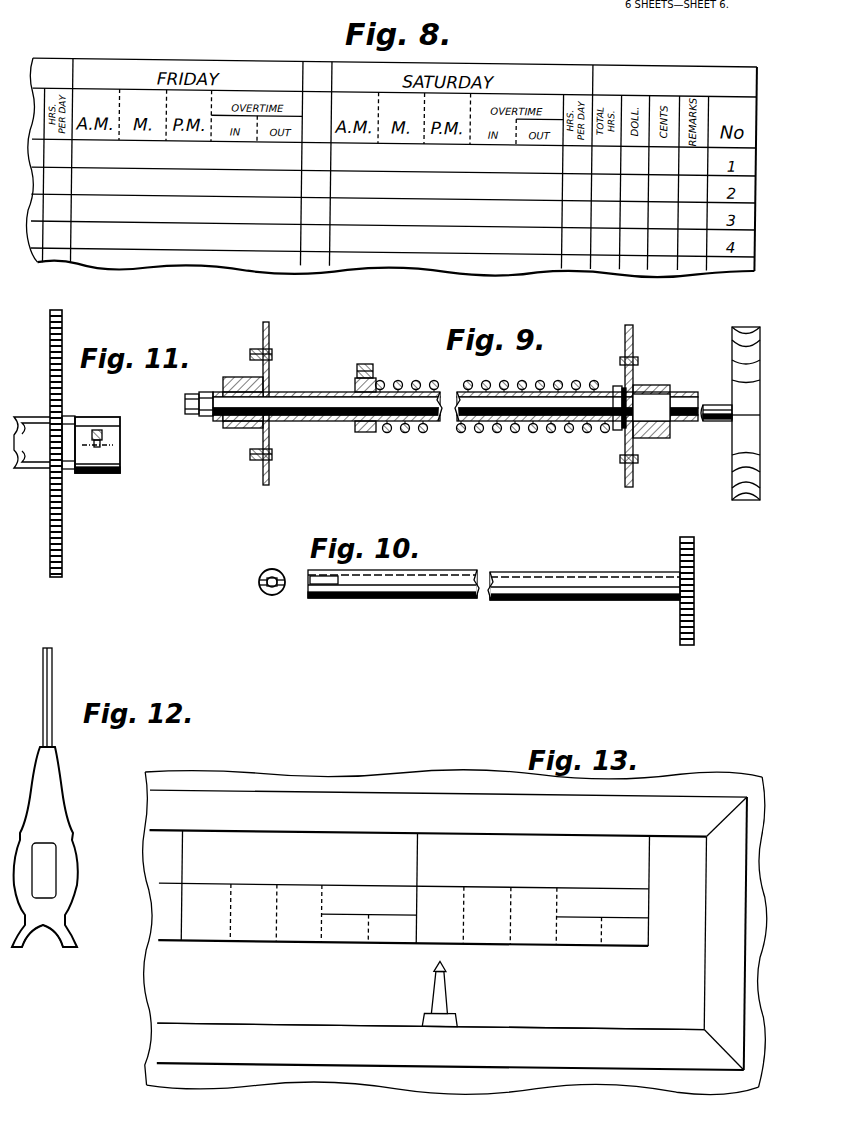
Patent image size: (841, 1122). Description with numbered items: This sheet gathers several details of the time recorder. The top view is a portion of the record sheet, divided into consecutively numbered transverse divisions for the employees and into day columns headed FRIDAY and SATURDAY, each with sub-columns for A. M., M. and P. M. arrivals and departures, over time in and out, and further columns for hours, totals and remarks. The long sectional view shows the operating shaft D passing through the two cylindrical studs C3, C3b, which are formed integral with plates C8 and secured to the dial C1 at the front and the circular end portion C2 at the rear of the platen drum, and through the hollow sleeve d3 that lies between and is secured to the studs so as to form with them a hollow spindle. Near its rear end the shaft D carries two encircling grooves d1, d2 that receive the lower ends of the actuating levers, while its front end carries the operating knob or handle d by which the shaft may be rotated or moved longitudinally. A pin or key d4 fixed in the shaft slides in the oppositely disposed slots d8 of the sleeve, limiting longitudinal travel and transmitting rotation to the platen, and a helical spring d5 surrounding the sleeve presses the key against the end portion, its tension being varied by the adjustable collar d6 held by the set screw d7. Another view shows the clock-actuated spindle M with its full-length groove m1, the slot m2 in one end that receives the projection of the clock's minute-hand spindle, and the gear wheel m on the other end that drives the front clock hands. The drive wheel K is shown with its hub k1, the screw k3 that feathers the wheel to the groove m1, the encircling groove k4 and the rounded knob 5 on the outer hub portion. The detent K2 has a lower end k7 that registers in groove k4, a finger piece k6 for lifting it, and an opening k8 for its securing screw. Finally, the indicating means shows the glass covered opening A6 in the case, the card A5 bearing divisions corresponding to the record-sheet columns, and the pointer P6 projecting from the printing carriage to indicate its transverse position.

In FIG. 9, the standard plate C8 is at (262, 345).
In FIG. 9, the circular end portion of the platen C2 is at (270, 478).
In FIG. 9, the cylindrical stud C3 is at (250, 377).
In FIG. 9, the cylindrical stud C3b is at (652, 383).
In FIG. 9, the circular dial C1 is at (633, 480).
In FIG. 9, the hollow sleeve d3 is at (295, 391).
In FIG. 9, the encircling groove d2 is at (199, 415).
In FIG. 9, the encircling groove d1 is at (208, 416).
In FIG. 9, the set screw d7 is at (365, 364).
In FIG. 9, the adjustable collar d6 is at (376, 384).
In FIG. 9, the helical spring d5 is at (470, 382).
In FIG. 9, the slot d8 is at (596, 390).
In FIG. 9, the pin or key d4 is at (622, 386).
In FIG. 9, the operating shaft D is at (720, 405).
In FIG. 9, the operating knob or handle d is at (735, 466).
In FIG. 11, the drive wheel K is at (67, 443).
In FIG. 11, the outer portion of the hub 5 is at (22, 462).
In FIG. 11, the groove k4 is at (69, 470).
In FIG. 11, the hub k1 is at (118, 418).
In FIG. 11, the screw k3 is at (98, 428).
In FIG. 10, the slot m2 is at (258, 586).
In FIG. 10, the groove m1 is at (271, 569).
In FIG. 10, the clock-actuated spindle M is at (500, 570).
In FIG. 10, the gear wheel m is at (694, 572).
In FIG. 12, the finger piece k6 is at (52, 690).
In FIG. 12, the detent K2 is at (60, 786).
In FIG. 12, the opening k8 is at (50, 870).
In FIG. 12, the lower end of the detent k7 is at (55, 935).
In FIG. 13, the card A5 is at (347, 942).
In FIG. 13, the pointer P6 is at (449, 992).
In FIG. 13, the glass covered opening A6 is at (430, 1004).